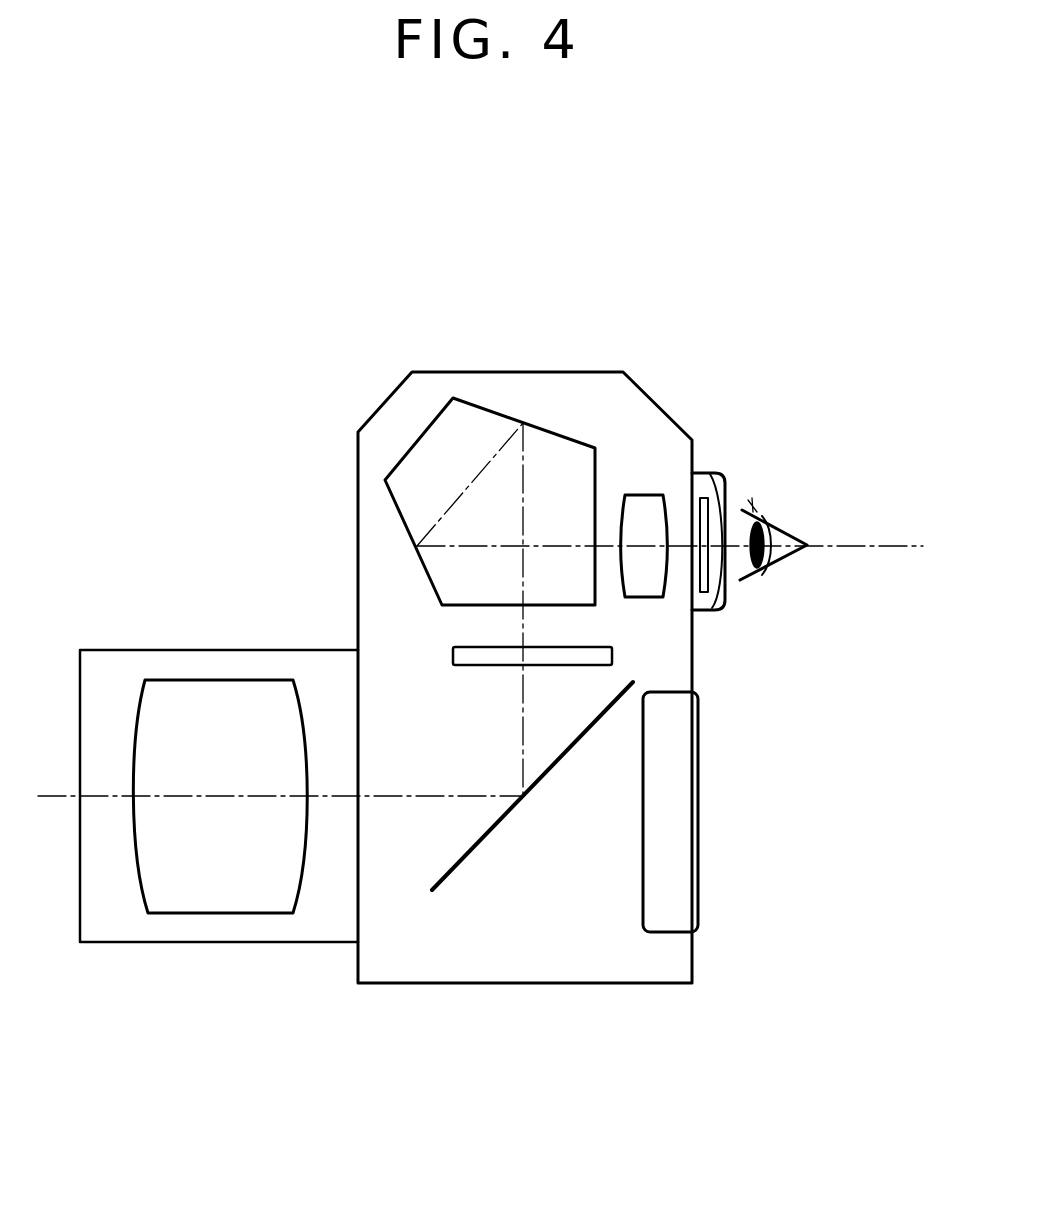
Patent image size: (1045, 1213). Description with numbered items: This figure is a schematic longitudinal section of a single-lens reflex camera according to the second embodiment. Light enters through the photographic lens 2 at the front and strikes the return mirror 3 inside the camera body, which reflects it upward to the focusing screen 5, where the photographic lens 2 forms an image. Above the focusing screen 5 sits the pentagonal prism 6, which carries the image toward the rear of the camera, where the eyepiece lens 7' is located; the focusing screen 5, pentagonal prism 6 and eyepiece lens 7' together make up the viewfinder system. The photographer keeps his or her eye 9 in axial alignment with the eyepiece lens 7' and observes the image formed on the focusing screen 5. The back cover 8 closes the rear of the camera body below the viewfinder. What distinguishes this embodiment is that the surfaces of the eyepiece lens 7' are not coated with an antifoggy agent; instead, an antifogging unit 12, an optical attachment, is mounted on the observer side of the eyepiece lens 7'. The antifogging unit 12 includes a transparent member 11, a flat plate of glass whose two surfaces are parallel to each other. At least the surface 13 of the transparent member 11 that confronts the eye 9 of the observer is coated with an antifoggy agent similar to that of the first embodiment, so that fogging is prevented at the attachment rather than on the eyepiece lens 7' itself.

The photographic lens 2 is at (130, 682).
The return mirror 3 is at (440, 882).
The focusing screen 5 is at (458, 655).
The pentagonal prism 6 is at (422, 458).
The eyepiece lens 7' is at (566, 440).
The back cover 8 is at (680, 900).
The eye 9 is at (771, 525).
The transparent member 11 is at (705, 498).
The antifogging unit 12 is at (710, 612).
The surface 13 is at (718, 500).